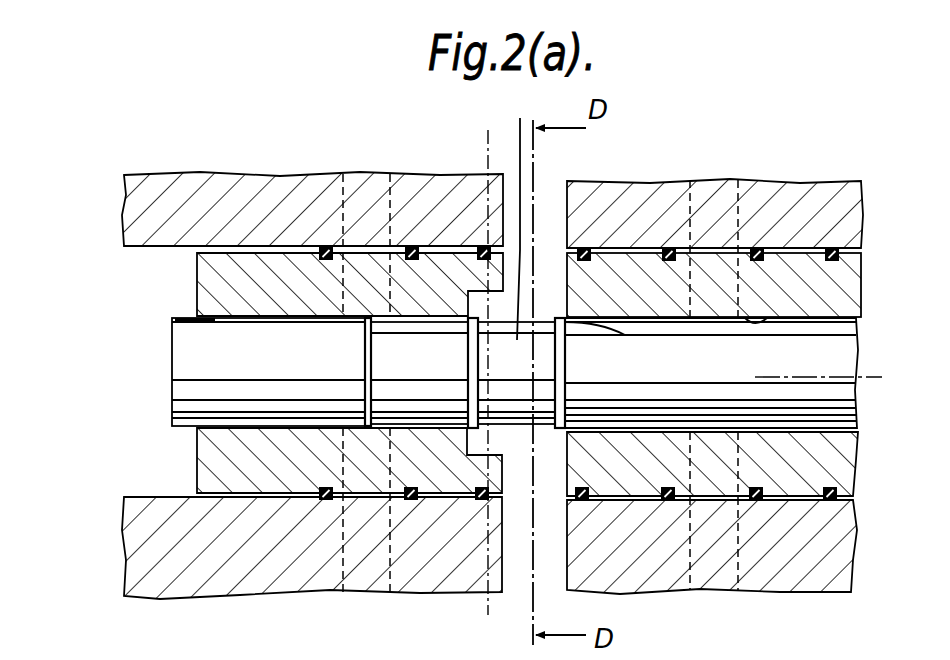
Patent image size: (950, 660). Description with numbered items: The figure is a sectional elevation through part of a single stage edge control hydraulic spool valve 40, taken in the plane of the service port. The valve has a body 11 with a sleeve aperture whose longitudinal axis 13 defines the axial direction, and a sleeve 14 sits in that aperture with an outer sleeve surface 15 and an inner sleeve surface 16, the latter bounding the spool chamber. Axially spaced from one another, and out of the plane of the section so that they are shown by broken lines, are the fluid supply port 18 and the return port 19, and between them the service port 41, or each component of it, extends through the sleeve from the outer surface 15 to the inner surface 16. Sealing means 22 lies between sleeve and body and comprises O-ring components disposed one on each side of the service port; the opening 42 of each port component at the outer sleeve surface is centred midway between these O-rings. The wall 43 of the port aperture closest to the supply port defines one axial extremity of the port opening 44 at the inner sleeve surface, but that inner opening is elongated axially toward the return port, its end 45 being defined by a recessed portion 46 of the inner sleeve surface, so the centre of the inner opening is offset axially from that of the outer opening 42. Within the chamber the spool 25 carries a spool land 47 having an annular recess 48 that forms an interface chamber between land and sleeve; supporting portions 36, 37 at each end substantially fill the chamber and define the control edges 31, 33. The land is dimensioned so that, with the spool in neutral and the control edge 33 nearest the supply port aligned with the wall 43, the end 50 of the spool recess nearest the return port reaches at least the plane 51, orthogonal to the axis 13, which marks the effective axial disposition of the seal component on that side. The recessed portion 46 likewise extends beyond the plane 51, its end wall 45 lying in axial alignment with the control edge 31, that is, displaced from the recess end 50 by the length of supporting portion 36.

The body 11 is at (170, 176).
The longitudinal axis 13 is at (870, 379).
The sleeve 14 is at (197, 271).
The outer sleeve surface 15 is at (212, 246).
The inner sleeve surface 16 is at (196, 323).
The fluid supply port 18 is at (722, 188).
The return port 19 is at (369, 174).
The sealing means 22 is at (478, 262).
The spool 25 is at (186, 405).
The control edge 31 is at (366, 328).
The control edge 33 is at (594, 325).
The supporting portion 36 is at (462, 340).
The supporting portion 37 is at (562, 322).
The edge control spool valve 40 is at (338, 153).
The service port 41 is at (560, 178).
The opening 42 is at (600, 253).
The wall 43 is at (676, 250).
The port opening 44 is at (526, 212).
The end 45 is at (488, 262).
The recessed portion 46 is at (480, 248).
The spool land 47 is at (575, 376).
The annular recess 48 is at (553, 372).
The end of spool recess 50 is at (477, 332).
The plane 51 is at (474, 173).